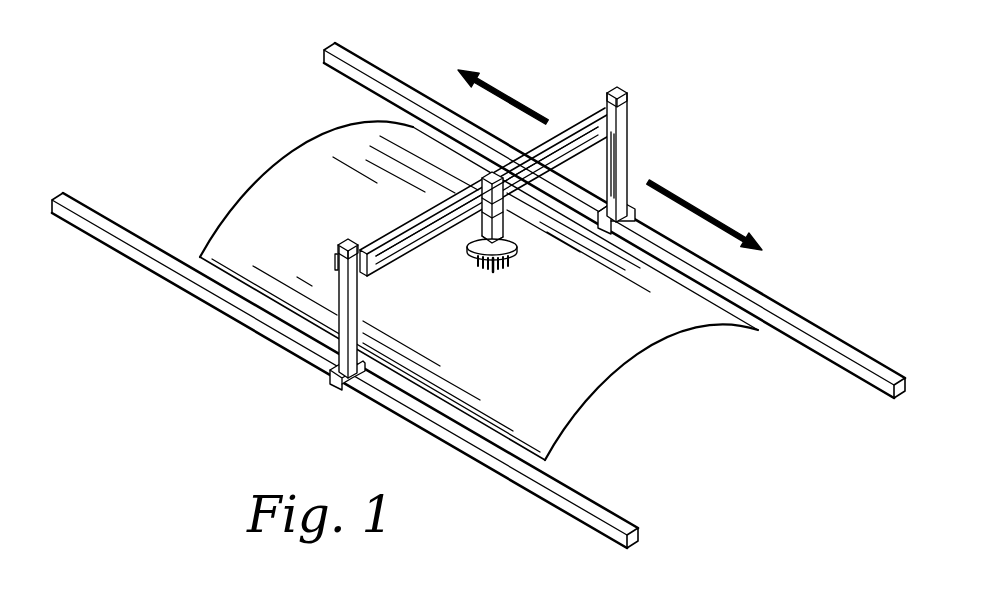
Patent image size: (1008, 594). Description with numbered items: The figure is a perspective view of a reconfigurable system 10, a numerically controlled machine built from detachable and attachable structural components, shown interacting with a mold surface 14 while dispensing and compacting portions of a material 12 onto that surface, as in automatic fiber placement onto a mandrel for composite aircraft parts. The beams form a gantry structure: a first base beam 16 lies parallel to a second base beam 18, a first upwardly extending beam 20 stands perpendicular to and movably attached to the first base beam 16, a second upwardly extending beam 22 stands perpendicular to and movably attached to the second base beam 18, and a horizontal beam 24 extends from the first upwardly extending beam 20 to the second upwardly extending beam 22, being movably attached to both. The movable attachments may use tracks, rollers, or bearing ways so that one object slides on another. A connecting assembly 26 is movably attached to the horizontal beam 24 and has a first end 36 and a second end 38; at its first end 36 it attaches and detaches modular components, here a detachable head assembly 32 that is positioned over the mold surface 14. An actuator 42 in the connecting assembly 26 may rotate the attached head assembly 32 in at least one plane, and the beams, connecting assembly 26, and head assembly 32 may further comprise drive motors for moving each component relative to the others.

The reconfigurable system 10 is at (757, 86).
The material 12 is at (492, 273).
The mold surface 14 is at (479, 290).
The first base beam 16 is at (562, 506).
The second base beam 18 is at (843, 350).
The first upwardly extending beam 20 is at (338, 303).
The second upwardly extending beam 22 is at (627, 160).
The horizontal beam 24 is at (577, 128).
The connecting assembly 26 is at (480, 192).
The detachable head assembly 32 is at (510, 242).
The first end 36 is at (468, 246).
The second end 38 is at (487, 170).
The actuator 42 is at (533, 203).